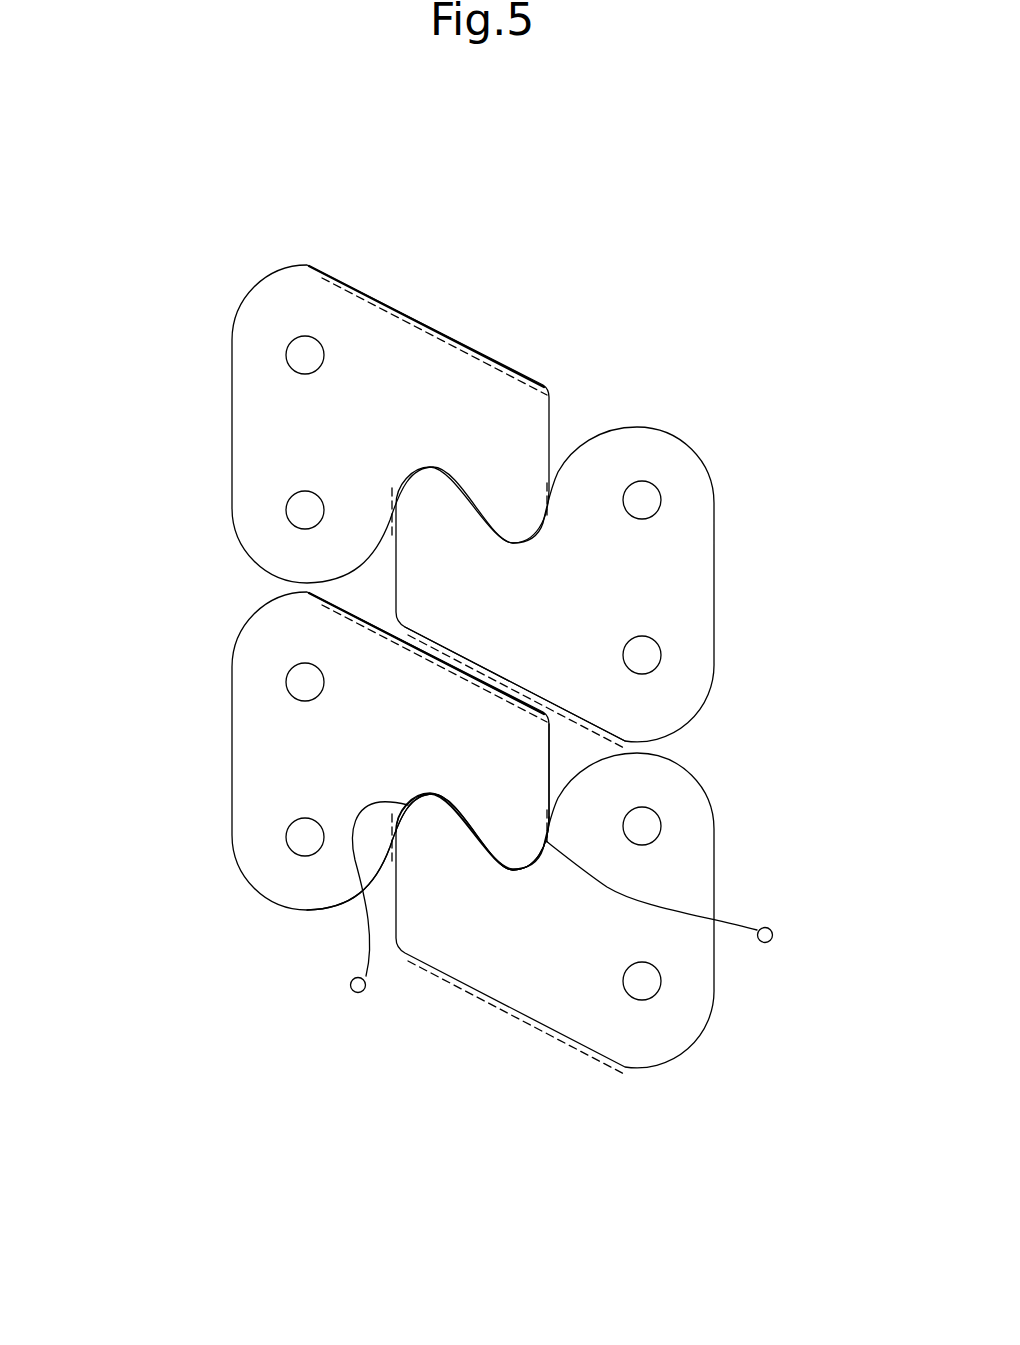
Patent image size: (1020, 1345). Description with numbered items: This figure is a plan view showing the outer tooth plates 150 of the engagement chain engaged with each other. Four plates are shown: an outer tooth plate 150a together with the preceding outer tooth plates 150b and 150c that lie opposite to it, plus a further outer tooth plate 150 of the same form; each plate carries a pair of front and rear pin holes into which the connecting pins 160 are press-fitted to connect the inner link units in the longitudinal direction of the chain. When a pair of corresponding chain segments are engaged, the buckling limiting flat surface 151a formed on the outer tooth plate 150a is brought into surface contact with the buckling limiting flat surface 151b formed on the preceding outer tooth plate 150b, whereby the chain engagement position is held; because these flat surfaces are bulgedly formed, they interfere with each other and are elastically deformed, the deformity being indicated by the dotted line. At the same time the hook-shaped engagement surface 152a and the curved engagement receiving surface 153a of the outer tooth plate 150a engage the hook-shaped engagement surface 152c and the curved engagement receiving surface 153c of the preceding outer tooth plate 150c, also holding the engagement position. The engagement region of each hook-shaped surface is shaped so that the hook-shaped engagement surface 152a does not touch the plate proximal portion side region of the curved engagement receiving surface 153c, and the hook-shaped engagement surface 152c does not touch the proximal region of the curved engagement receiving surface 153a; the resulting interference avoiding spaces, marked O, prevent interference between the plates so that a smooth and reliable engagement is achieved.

The outer tooth plate 150 is at (287, 303).
The outer tooth plate 150a is at (265, 650).
The preceding outer tooth plate 150b is at (668, 685).
The preceding outer tooth plate 150c is at (650, 1043).
The buckling limiting flat surface 151a is at (383, 620).
The buckling limiting flat surface 151b is at (566, 716).
The hook-shaped engagement surface 152a is at (513, 872).
The hook-shaped engagement surface 152c is at (410, 805).
The curved engagement receiving surface 153a is at (407, 813).
The curved engagement receiving surface 153c is at (547, 842).
The connecting pin 160 is at (290, 362).